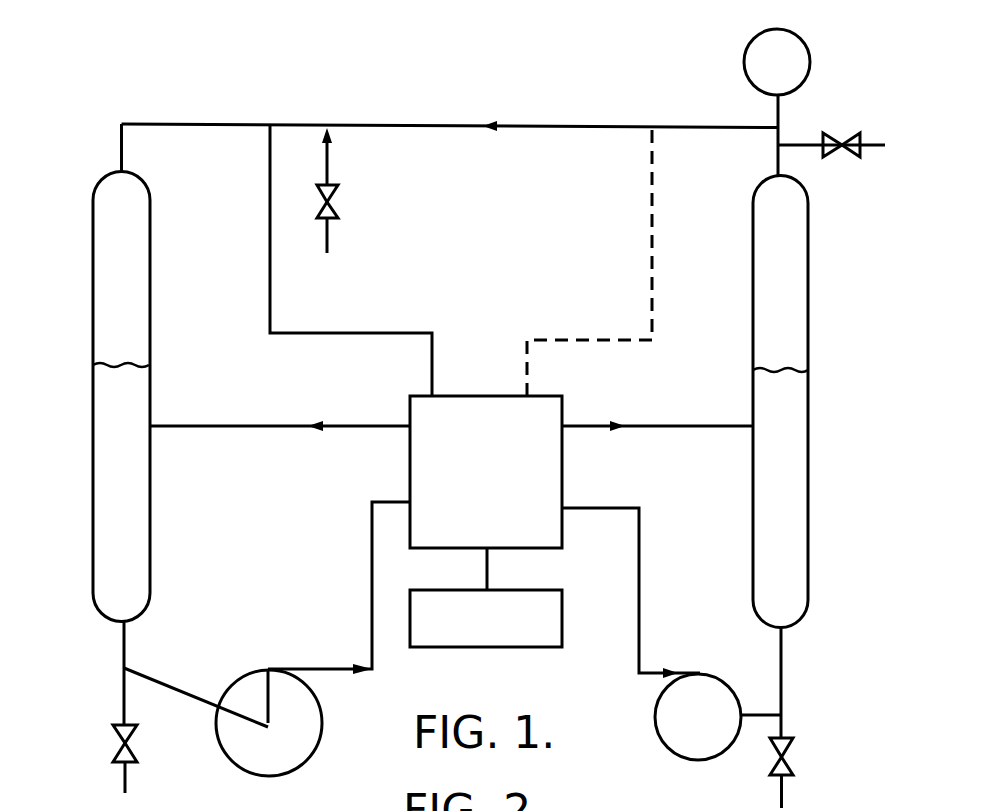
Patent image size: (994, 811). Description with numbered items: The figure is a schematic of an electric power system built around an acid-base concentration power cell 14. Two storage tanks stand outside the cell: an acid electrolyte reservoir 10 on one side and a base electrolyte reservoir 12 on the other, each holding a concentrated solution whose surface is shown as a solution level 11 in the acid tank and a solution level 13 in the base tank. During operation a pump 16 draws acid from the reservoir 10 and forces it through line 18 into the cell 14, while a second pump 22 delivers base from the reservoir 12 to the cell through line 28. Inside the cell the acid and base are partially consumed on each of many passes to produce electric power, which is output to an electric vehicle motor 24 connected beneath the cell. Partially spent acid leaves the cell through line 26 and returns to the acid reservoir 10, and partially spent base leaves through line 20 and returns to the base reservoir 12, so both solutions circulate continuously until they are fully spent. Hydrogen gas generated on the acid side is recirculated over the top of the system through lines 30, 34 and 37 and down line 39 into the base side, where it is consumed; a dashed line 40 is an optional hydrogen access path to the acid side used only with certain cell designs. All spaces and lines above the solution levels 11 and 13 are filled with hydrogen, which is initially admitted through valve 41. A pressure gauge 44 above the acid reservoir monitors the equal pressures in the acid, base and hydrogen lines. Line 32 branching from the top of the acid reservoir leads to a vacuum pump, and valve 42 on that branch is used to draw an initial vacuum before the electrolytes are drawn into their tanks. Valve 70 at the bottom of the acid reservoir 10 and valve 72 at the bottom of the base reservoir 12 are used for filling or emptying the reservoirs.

The acid electrolyte reservoir 10 is at (797, 578).
The solution level 11 is at (777, 370).
The base electrolyte reservoir 12 is at (93, 535).
The solution level 13 is at (110, 363).
The concentration power cell 14 is at (482, 396).
The pump 16 is at (667, 752).
The line 18 is at (640, 610).
The line 20 is at (238, 424).
The pump 22 is at (313, 757).
The electric vehicle motor 24 is at (423, 650).
The line 26 is at (698, 428).
The line 28 is at (370, 572).
The line 30 is at (775, 160).
The line 32 is at (795, 143).
The line 34 is at (412, 124).
The line 37 is at (118, 142).
The hydrogen access line 39 is at (350, 332).
The hydrogen access line 40 is at (650, 232).
The valve 41 is at (457, 215).
The valve 42 is at (838, 152).
The pressure gauge 44 is at (803, 35).
The valve 70 is at (792, 758).
The valve 72 is at (132, 745).